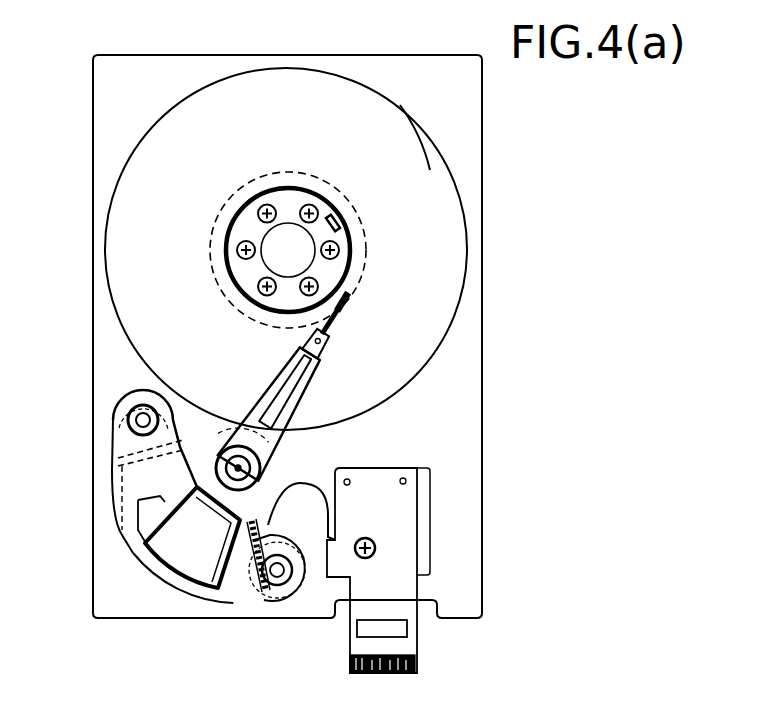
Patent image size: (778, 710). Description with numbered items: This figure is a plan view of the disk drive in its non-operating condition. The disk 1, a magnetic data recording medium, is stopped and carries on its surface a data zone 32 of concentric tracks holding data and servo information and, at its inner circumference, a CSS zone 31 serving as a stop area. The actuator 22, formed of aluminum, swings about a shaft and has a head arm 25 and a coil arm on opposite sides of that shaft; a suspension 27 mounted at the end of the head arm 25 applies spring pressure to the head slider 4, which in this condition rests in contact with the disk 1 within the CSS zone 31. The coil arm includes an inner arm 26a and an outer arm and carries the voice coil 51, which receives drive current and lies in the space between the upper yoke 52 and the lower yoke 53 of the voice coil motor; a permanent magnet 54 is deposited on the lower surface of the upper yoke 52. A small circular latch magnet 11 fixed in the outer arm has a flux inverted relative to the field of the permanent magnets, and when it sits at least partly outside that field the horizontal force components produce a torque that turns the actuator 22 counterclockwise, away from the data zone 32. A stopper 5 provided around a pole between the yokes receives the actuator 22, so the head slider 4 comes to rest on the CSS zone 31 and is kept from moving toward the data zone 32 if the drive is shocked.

The disk 1 is at (404, 110).
The data zone 32 is at (418, 163).
The CSS zone 31 is at (334, 196).
The head slider 4 is at (351, 294).
The suspension 27 is at (340, 308).
The head arm 25 is at (266, 392).
The actuator 22 is at (240, 409).
The lower yoke 53 is at (113, 472).
The inner arm 26a is at (137, 514).
The permanent magnet 54 is at (131, 550).
The voice coil 51 is at (171, 580).
The latch magnet 11 is at (238, 588).
The upper yoke 52 is at (262, 594).
The stopper 5 is at (305, 597).